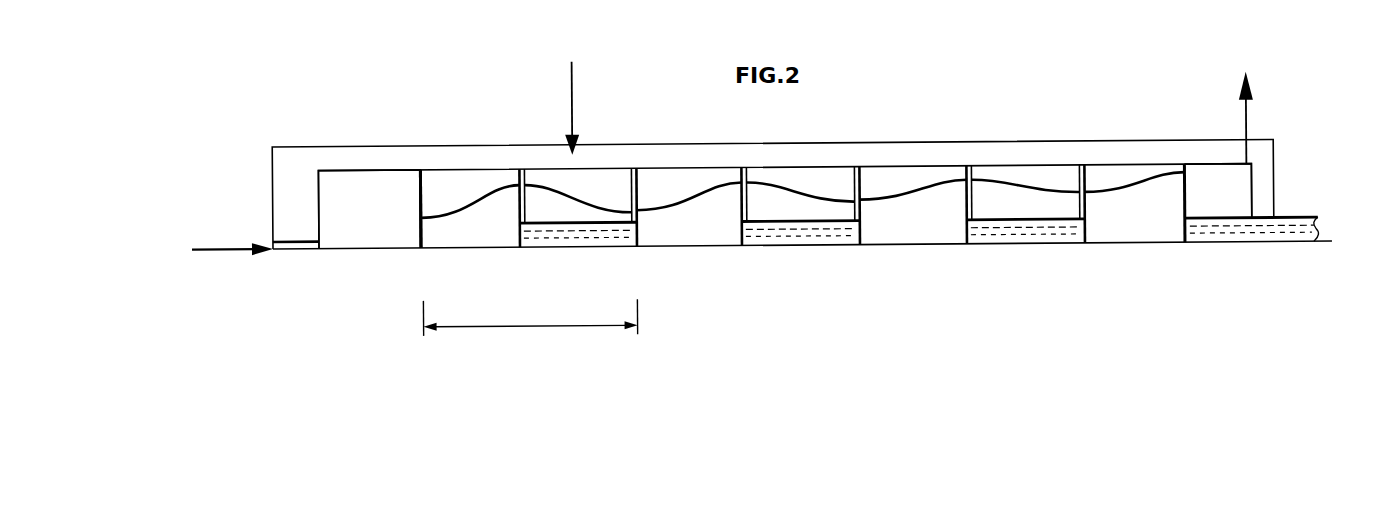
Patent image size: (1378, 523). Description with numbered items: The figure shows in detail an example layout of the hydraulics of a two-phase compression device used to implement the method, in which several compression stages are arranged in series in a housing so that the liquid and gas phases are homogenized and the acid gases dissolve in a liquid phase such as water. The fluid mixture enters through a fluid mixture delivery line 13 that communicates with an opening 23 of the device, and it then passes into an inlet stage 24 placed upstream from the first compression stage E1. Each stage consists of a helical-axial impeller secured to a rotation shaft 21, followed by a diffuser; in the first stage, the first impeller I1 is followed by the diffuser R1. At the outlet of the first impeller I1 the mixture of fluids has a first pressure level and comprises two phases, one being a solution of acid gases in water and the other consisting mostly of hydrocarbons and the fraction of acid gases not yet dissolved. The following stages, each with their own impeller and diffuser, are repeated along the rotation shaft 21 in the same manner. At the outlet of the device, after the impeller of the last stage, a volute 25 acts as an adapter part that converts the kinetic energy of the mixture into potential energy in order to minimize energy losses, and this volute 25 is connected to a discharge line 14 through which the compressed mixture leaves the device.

The fluid mixture delivery line 13 is at (209, 249).
The opening 23 is at (266, 236).
The inlet stage 24 is at (379, 221).
The volute 25 is at (1234, 214).
The discharge line 14 is at (1249, 113).
The rotation shaft 21 is at (1312, 226).
The first impeller I1 is at (488, 226).
The diffuser R1 is at (587, 212).
The first compression stage E1 is at (530, 316).